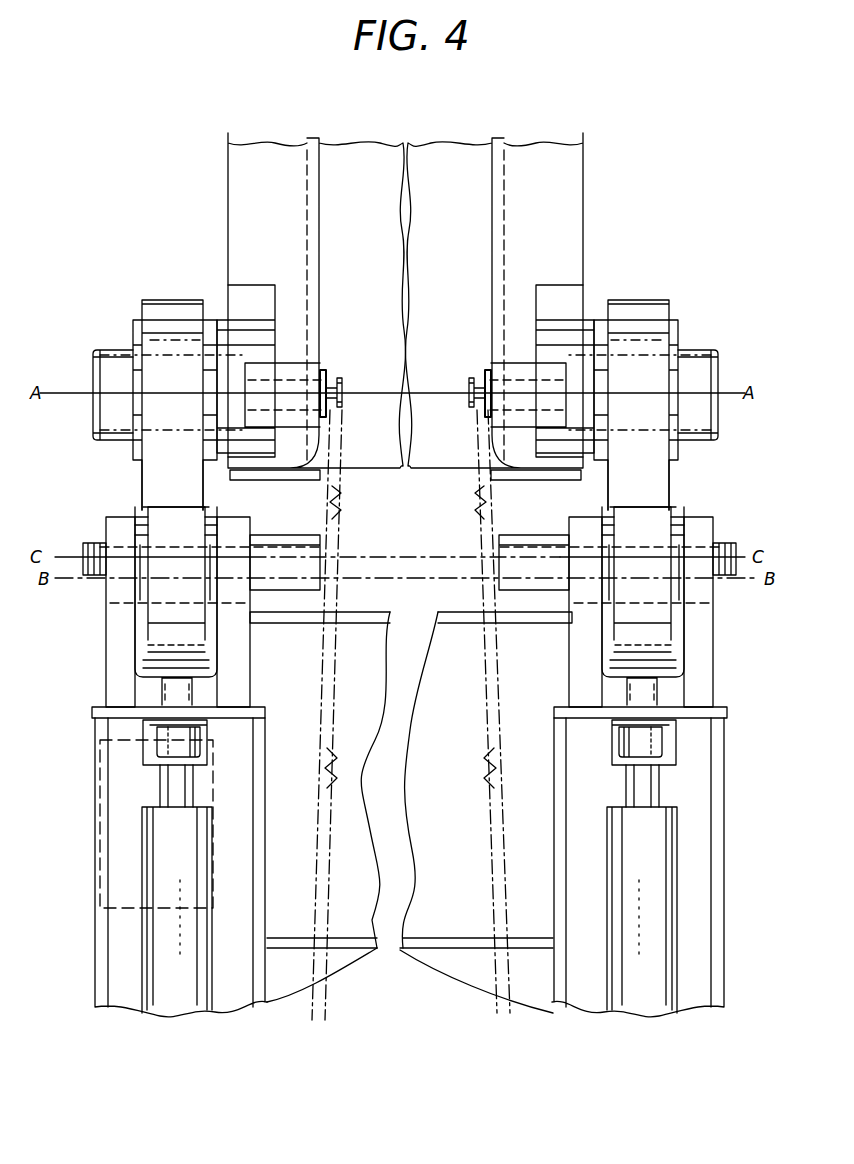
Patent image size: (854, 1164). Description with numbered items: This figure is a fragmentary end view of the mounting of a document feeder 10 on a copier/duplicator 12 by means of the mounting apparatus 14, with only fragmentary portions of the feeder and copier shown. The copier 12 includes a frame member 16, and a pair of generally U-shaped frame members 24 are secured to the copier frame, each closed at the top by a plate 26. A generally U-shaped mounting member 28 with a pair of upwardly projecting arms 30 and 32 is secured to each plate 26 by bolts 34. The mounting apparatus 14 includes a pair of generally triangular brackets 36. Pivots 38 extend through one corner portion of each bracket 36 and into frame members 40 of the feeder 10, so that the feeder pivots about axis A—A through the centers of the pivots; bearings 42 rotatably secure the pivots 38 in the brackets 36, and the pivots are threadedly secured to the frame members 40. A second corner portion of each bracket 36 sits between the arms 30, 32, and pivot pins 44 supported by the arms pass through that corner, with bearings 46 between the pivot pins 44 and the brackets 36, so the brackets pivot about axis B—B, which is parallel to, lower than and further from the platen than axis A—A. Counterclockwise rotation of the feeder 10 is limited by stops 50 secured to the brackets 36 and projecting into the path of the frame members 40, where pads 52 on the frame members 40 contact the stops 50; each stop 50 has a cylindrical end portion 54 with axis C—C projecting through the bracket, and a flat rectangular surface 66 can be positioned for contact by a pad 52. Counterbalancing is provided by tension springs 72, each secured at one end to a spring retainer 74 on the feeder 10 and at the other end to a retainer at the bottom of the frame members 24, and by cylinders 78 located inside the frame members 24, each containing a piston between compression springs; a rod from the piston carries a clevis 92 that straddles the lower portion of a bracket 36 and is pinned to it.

The document feeder 10 is at (368, 294).
The copier/duplicator 12 is at (411, 836).
The mounting apparatus 14 is at (395, 369).
The frame member 16 is at (360, 891).
The U-shaped frame member 24 is at (98, 951).
The plate 26 is at (100, 713).
The U-shaped mounting member 28 is at (407, 594).
The arm 30 is at (113, 645).
The arm 32 is at (235, 668).
The bolt 34 is at (176, 757).
The bracket 36 is at (136, 482).
The pivot 38 is at (105, 350).
The frame member 40 is at (320, 200).
The bearing 42 is at (135, 320).
The pivot pin 44 is at (100, 590).
The bearing 46 is at (135, 513).
The stop 50 is at (322, 547).
The pad 52 is at (258, 481).
The cylindrical end portion 54 is at (92, 545).
The flat rectangular surface 66 is at (294, 534).
The tension spring 72 is at (342, 506).
The spring retainer 74 is at (342, 390).
The cylinder 78 is at (200, 926).
The clevis 92 is at (147, 750).